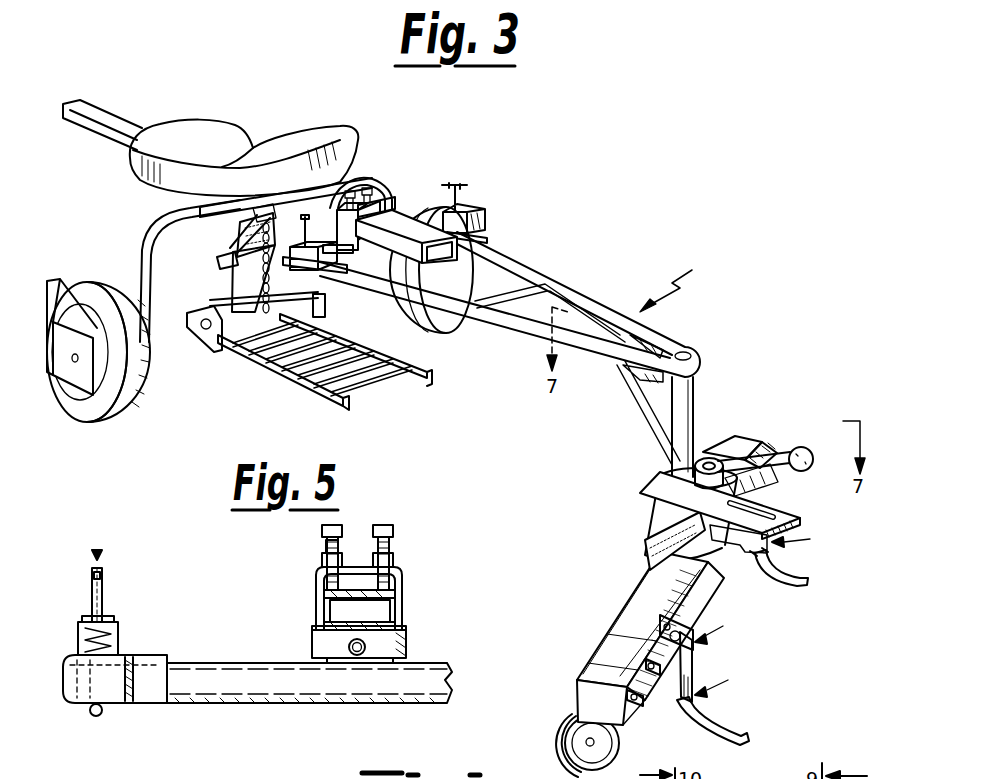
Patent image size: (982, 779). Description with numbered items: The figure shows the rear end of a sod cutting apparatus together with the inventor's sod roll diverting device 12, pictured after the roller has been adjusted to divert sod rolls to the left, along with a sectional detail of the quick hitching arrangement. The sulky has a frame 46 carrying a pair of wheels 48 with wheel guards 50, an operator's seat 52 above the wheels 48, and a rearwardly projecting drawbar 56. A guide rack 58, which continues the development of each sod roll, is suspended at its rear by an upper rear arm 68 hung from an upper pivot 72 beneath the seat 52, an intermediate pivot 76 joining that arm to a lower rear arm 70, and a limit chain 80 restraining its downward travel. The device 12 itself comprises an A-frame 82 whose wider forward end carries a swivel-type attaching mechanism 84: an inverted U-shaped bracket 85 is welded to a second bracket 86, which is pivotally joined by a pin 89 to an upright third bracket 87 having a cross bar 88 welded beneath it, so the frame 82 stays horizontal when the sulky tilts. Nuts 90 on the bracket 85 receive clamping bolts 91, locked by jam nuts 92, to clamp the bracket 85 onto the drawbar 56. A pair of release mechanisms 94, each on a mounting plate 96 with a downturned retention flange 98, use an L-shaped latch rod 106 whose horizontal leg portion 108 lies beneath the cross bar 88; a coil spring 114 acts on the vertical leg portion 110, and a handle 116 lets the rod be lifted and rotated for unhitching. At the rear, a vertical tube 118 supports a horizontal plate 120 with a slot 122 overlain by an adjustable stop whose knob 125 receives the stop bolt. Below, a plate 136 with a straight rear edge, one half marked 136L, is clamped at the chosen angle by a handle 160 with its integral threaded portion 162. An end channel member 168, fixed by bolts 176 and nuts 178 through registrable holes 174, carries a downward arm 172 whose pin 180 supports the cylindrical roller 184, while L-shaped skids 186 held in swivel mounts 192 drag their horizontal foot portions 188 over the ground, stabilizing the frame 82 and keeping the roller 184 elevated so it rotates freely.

In FIG. 3, the device for diverting sod rolls 12 is at (683, 284).
In FIG. 3, the frame 46 is at (142, 236).
In FIG. 3, the wheels 48 is at (140, 415).
In FIG. 3, the wheel guards 50 is at (52, 282).
In FIG. 3, the operator's seat 52 is at (198, 122).
In FIG. 3, the drawbar 56 is at (463, 238).
In FIG. 5, the drawbar 56 is at (337, 633).
In FIG. 3, the guide rack 58 is at (280, 374).
In FIG. 3, the upper rear arm 68 is at (245, 226).
In FIG. 3, the lower rear arm 70 is at (240, 283).
In FIG. 3, the upper pivot 72 is at (212, 208).
In FIG. 3, the intermediate pivot 76 is at (217, 260).
In FIG. 3, the limit chain 80 is at (325, 316).
In FIG. 3, the A-frame 82 is at (538, 285).
In FIG. 3, the swivel-type attaching mechanism 84 is at (373, 182).
In FIG. 5, the swivel-type attaching mechanism 84 is at (331, 612).
In FIG. 5, the bracket 85 is at (403, 590).
In FIG. 3, the second bracket 86 is at (394, 203).
In FIG. 5, the second bracket 86 is at (407, 640).
In FIG. 5, the third U-shaped bracket 87 is at (366, 664).
In FIG. 3, the cross rod or bar 88 is at (362, 279).
In FIG. 5, the cross rod or bar 88 is at (275, 706).
In FIG. 5, the pin 89 is at (366, 648).
In FIG. 5, the nuts 90 is at (322, 563).
In FIG. 5, the clamping bolts 91 is at (386, 525).
In FIG. 5, the jam nuts 92 is at (306, 541).
In FIG. 3, the release mechanisms 94 is at (462, 200).
In FIG. 5, the release mechanisms 94 is at (113, 604).
In FIG. 5, the mounting plate 96 is at (160, 655).
In FIG. 5, the retention flange 98 is at (67, 692).
In FIG. 5, the L-shaped latch rod 106 is at (97, 552).
In FIG. 5, the horizontal leg portion 108 is at (100, 716).
In FIG. 5, the vertical leg portion 110 is at (92, 580).
In FIG. 5, the coil spring 114 is at (112, 632).
In FIG. 5, the handle 116 is at (101, 575).
In FIG. 3, the vertical tube 118 is at (696, 392).
In FIG. 3, the horizontal plate 120 is at (690, 504).
In FIG. 3, the slot 122 is at (772, 495).
In FIG. 3, the knob 125 is at (770, 562).
In FIG. 3, the plate 136 is at (745, 445).
In FIG. 3, the left half of rear edge 136L is at (650, 537).
In FIG. 3, the handle 160 is at (790, 448).
In FIG. 3, the nut or threaded portion 162 is at (696, 464).
In FIG. 3, the end channel member 168 is at (606, 630).
In FIG. 3, the arm 172 is at (592, 692).
In FIG. 3, the registrable holes 174 is at (660, 663).
In FIG. 3, the bolts 176 is at (691, 700).
In FIG. 3, the nuts 178 is at (636, 707).
In FIG. 3, the pins 180 is at (575, 750).
In FIG. 3, the cylindrical roller 184 is at (570, 764).
In FIG. 3, the L-shaped skids 186 is at (770, 613).
In FIG. 3, the horizontal foot portion 188 is at (800, 592).
In FIG. 3, the swivel mounts 192 is at (709, 632).